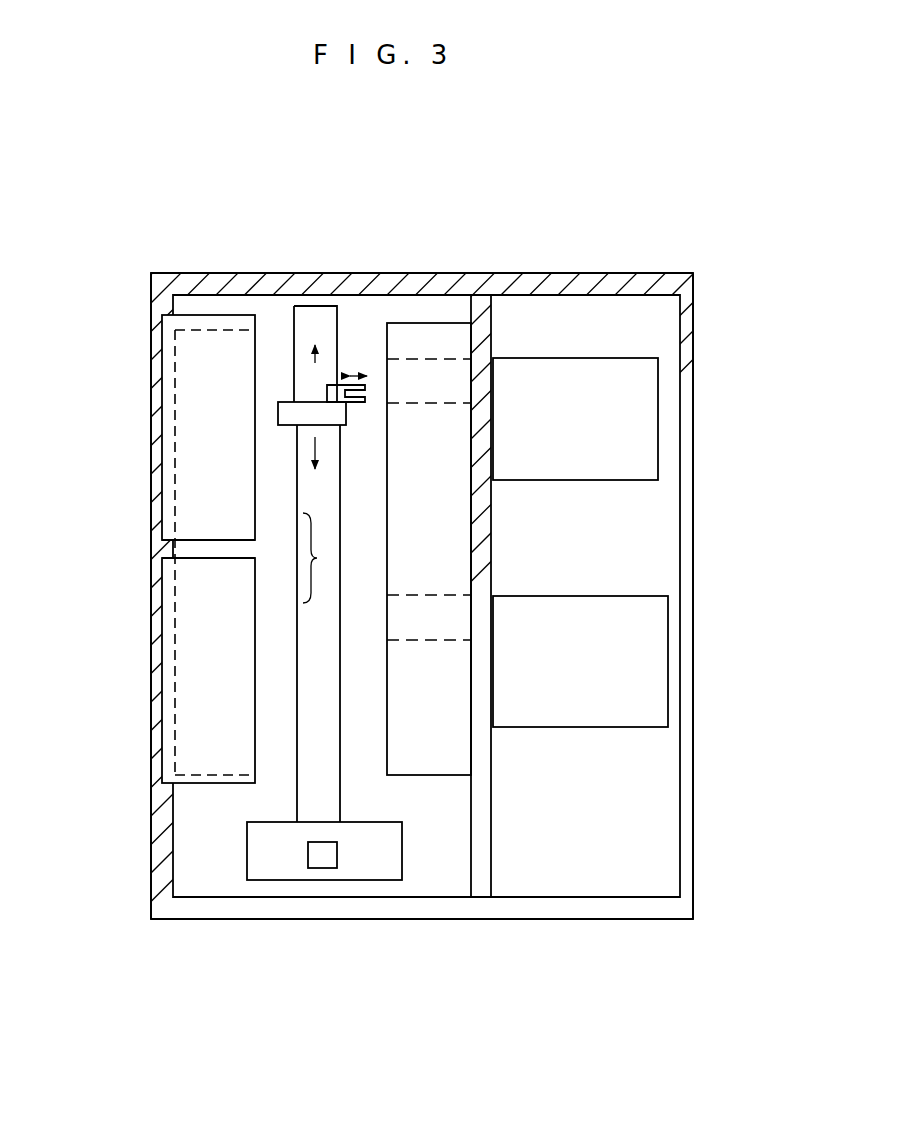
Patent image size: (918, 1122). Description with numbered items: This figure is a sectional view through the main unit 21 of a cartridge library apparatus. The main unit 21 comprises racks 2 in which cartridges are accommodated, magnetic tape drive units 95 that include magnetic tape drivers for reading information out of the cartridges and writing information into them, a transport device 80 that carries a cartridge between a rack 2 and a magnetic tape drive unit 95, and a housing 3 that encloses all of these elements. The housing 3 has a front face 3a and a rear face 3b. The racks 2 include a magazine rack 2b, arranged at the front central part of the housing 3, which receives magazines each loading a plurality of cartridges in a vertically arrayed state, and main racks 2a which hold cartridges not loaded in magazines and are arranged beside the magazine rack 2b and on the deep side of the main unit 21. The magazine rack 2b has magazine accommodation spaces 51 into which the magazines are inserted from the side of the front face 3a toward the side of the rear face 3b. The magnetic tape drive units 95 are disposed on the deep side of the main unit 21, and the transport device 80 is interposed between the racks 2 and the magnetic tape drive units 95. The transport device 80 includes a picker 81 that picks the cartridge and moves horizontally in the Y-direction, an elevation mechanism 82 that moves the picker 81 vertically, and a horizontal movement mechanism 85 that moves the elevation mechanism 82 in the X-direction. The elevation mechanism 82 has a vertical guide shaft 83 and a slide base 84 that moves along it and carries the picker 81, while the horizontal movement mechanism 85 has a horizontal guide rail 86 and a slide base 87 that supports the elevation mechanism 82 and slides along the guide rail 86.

The main unit 21 is at (156, 268).
The housing 3 is at (232, 283).
The front face 3a is at (150, 883).
The rear face 3b is at (694, 849).
The racks 2 is at (80, 488).
The main rack 2a is at (160, 566).
The magazine rack 2b is at (160, 490).
The magazine accommodation portion 51 is at (233, 520).
The transport device 80 is at (318, 300).
The picker 81 is at (333, 385).
The elevation mechanism 82 is at (228, 187).
The guide shaft 83 is at (307, 315).
The slide base 84 is at (285, 402).
The horizontal movement mechanism 85 is at (297, 965).
The guide rail 86 is at (323, 858).
The slide base 87 is at (385, 868).
The magnetic tape drive unit 95 is at (617, 357).